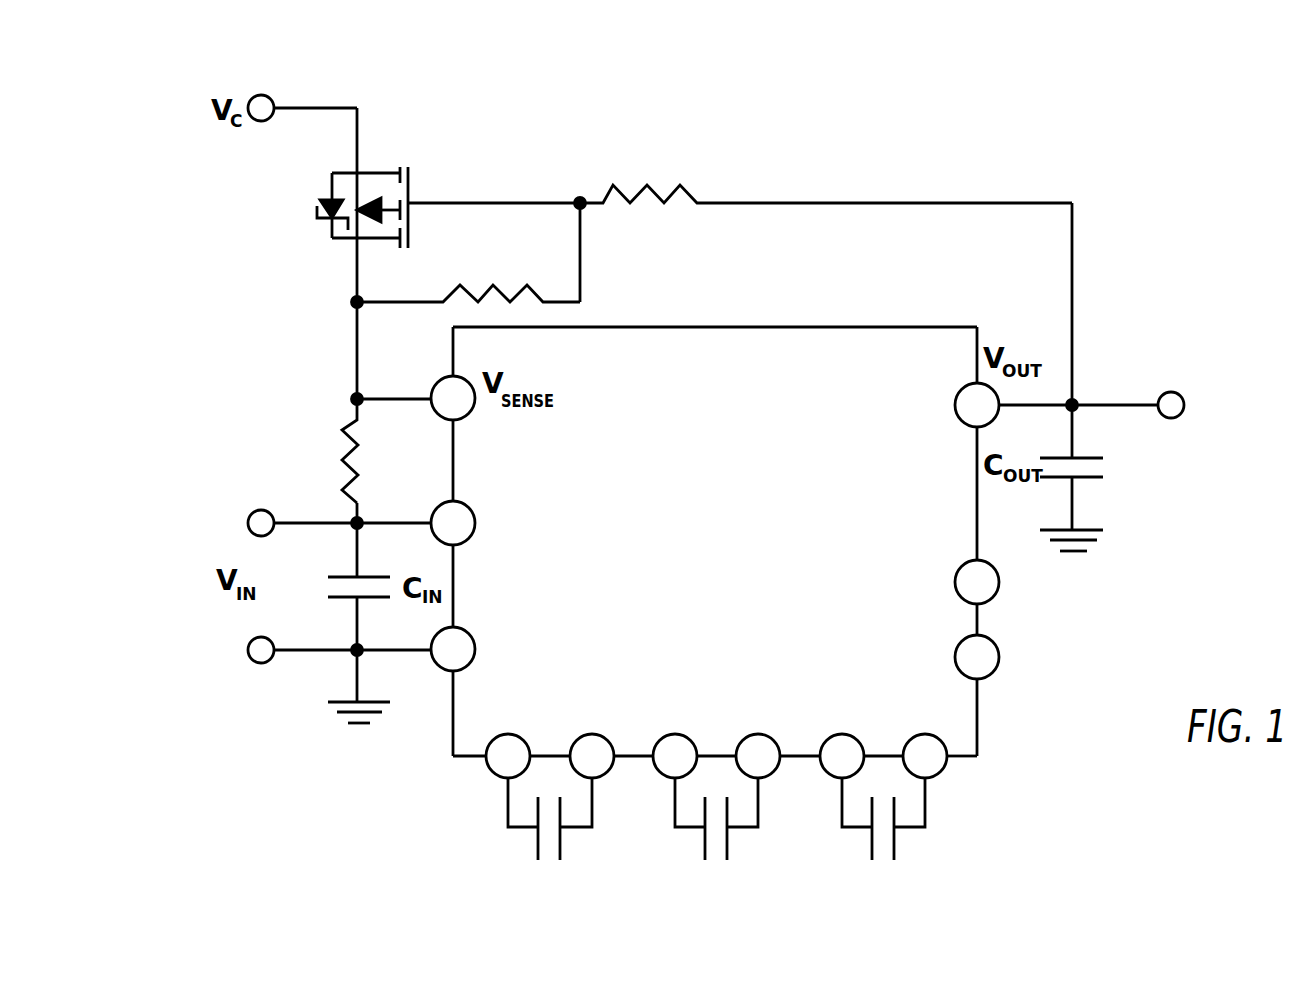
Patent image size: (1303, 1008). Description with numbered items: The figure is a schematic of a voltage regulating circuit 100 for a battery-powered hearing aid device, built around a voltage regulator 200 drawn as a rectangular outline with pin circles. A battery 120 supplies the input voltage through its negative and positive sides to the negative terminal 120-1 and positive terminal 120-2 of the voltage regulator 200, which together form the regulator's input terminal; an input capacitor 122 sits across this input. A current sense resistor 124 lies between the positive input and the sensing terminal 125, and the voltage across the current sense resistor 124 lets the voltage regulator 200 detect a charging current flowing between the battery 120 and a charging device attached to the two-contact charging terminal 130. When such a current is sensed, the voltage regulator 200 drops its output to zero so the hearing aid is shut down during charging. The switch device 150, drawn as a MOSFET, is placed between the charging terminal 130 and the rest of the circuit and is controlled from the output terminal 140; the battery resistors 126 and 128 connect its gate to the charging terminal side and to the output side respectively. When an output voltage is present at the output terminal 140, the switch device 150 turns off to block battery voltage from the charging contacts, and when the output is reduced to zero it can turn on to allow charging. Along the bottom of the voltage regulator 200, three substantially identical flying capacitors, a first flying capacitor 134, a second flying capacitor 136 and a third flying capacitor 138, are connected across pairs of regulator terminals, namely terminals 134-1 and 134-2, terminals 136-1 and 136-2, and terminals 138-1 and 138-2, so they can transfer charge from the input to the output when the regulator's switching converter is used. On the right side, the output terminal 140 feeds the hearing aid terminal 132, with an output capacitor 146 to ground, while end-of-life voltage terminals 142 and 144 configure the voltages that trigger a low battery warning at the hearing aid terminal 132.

The voltage regulating circuit 100 is at (1177, 169).
The battery 120 is at (249, 650).
The negative terminal 120-1 is at (467, 630).
The positive terminal 120-2 is at (467, 503).
The input capacitor 122 is at (335, 600).
The current sense resistor 124 is at (342, 430).
The sensing terminal 125 is at (467, 418).
The battery resistor 126 is at (458, 288).
The battery resistor 128 is at (688, 187).
The charging terminal 130 is at (253, 95).
The hearing aid terminal 132 is at (1172, 419).
The first flying capacitor 134 is at (562, 843).
The terminal 134-1 is at (600, 734).
The first flying capacitor pin 134-2 is at (498, 736).
The second flying capacitor 136 is at (729, 843).
The terminal 136-1 is at (767, 734).
The second flying capacitor pin 136-2 is at (665, 736).
The third flying capacitor 138 is at (896, 843).
The terminal 138-1 is at (933, 734).
The third flying capacitor pin 138-2 is at (831, 736).
The output terminal 140 is at (962, 423).
The end-of-life voltage terminal 142 is at (962, 562).
The end-of-life voltage terminal 144 is at (962, 637).
The output capacitor 146 is at (1093, 478).
The switch device 150 is at (380, 153).
The voltage regulator 200 is at (732, 465).